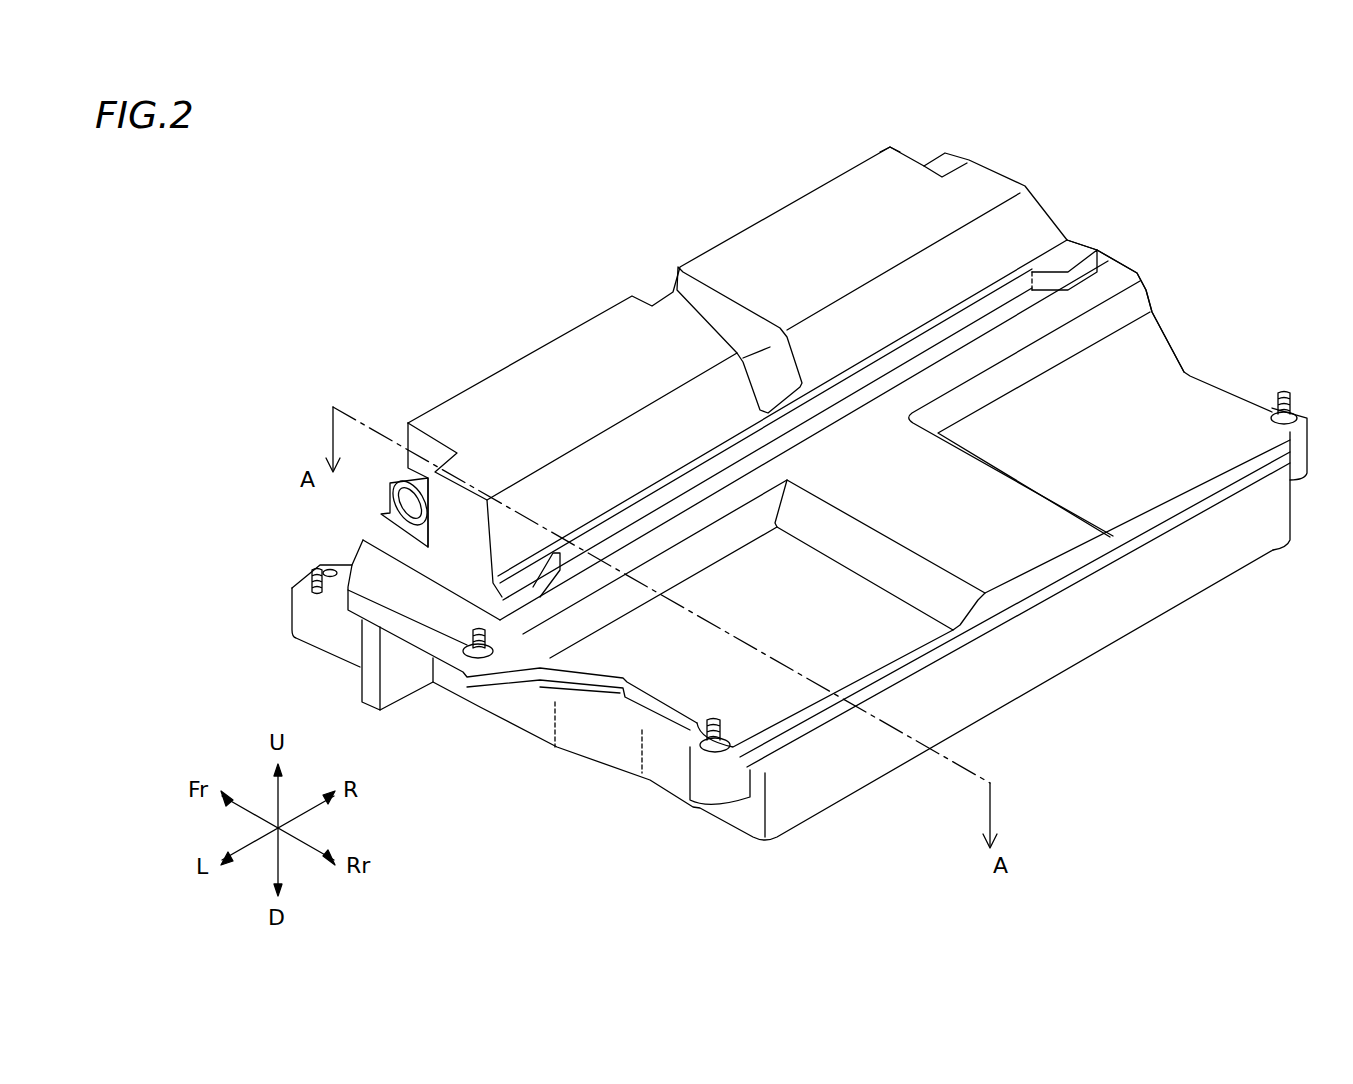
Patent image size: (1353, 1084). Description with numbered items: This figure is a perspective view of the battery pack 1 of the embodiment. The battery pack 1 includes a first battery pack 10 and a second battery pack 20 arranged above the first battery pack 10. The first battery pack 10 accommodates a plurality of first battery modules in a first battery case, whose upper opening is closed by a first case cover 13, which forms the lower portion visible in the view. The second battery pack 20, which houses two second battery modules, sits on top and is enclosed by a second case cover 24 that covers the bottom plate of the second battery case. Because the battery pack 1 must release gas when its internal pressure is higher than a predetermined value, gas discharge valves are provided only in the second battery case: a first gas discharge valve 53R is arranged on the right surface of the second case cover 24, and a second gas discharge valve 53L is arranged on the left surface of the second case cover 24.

The battery pack 1 is at (488, 206).
The first battery pack 10 is at (1220, 335).
The first case cover 13 is at (1142, 356).
The second battery pack 20 is at (1043, 132).
The second case cover 24 is at (888, 164).
The first gas discharge valve 53R is at (960, 153).
The second gas discharge valve 53L is at (410, 468).